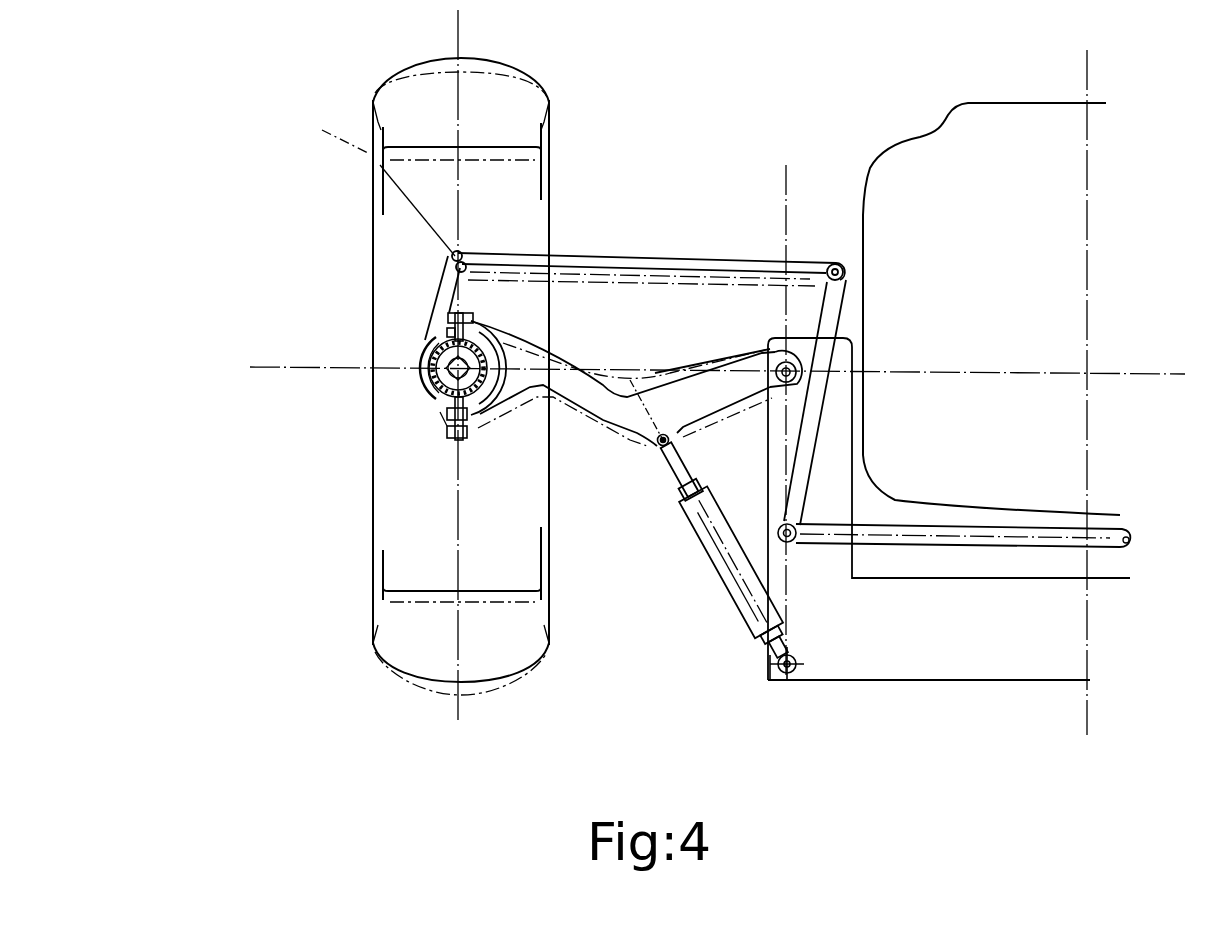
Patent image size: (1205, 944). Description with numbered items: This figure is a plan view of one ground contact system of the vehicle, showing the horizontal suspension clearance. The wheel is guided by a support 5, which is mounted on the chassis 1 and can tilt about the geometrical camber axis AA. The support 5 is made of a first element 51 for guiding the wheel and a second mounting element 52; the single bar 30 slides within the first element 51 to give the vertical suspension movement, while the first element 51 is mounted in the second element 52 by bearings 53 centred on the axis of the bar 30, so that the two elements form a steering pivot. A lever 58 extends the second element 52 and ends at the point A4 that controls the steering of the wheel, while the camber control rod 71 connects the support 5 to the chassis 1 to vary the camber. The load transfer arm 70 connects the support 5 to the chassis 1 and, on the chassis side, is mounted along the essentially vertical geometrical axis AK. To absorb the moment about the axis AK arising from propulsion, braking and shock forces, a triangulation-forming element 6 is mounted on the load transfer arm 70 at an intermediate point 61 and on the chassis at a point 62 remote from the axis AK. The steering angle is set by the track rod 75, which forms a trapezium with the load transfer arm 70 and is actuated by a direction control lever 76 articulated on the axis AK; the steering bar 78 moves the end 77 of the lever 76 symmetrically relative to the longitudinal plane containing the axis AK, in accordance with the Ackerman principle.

The chassis 1 is at (925, 663).
The support 5 is at (436, 329).
The triangulation-forming element 6 is at (745, 600).
The bar 30 is at (428, 362).
The first element 51 is at (432, 395).
The second mounting element 52 is at (422, 380).
The bearings 53 is at (440, 412).
The lever 58 is at (448, 297).
The point 61 is at (668, 448).
The point 62 is at (775, 668).
The load transfer arm 70 is at (703, 390).
The camber control rod 71 is at (787, 620).
The track rod 75 is at (630, 258).
The direction control lever 76 is at (838, 302).
The end of the lever 77 is at (800, 565).
The steering bar 78 is at (1065, 540).
The point A4 is at (363, 179).
The geometrical camber axis AA is at (442, 523).
The essentially vertical geometrical axis AK is at (800, 362).